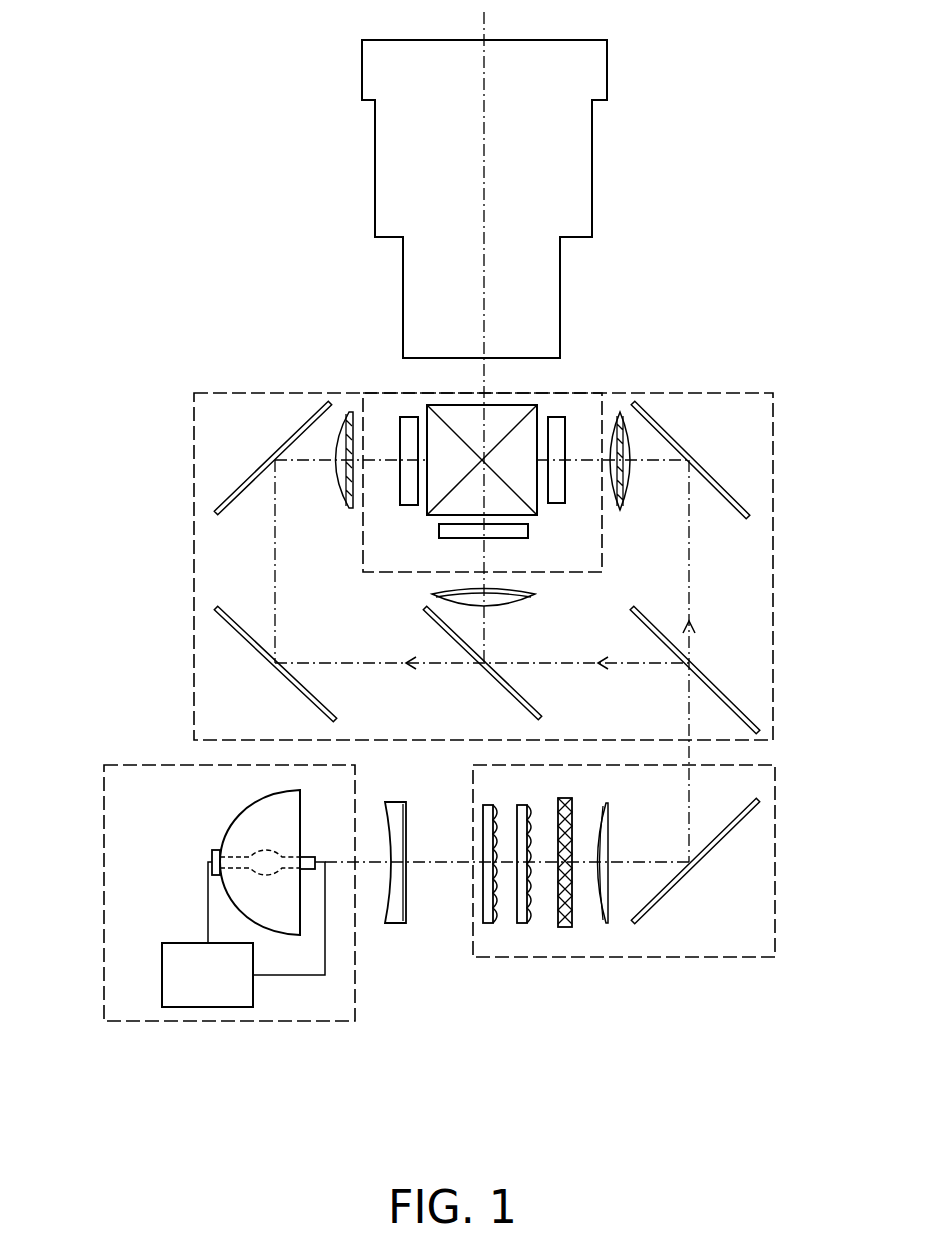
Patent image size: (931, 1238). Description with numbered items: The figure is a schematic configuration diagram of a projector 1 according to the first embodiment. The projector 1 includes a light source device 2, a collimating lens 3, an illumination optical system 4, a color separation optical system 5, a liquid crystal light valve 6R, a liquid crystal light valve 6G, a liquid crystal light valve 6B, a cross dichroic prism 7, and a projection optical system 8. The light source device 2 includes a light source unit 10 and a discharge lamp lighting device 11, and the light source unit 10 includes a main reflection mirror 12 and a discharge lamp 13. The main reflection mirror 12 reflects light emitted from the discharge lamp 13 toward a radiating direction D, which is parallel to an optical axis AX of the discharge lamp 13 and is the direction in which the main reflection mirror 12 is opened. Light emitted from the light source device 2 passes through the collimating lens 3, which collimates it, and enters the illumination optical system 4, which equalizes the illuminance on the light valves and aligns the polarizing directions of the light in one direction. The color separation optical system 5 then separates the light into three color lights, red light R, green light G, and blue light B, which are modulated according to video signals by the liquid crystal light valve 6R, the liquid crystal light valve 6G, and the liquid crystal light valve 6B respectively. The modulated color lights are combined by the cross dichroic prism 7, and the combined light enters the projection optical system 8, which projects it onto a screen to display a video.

The projector 1 is at (270, 90).
The light source device 2 is at (198, 1022).
The collimating lens 3 is at (395, 925).
The illumination optical system 4 is at (775, 918).
The color separation optical system 5 is at (773, 720).
The liquid crystal light valve 6R is at (556, 414).
The liquid crystal light valve 6G is at (508, 538).
The liquid crystal light valve 6B is at (411, 508).
The cross dichroic prism 7 is at (470, 405).
The projection optical system 8 is at (591, 203).
The light source unit 10 is at (233, 855).
The discharge lamp lighting device 11 is at (162, 983).
The main reflection mirror 12 is at (236, 825).
The discharge lamp 13 is at (305, 855).
The optical axis AX is at (447, 866).
The radiating direction D is at (328, 1047).
The red light R is at (690, 580).
The green light G is at (484, 622).
The blue light B is at (275, 586).